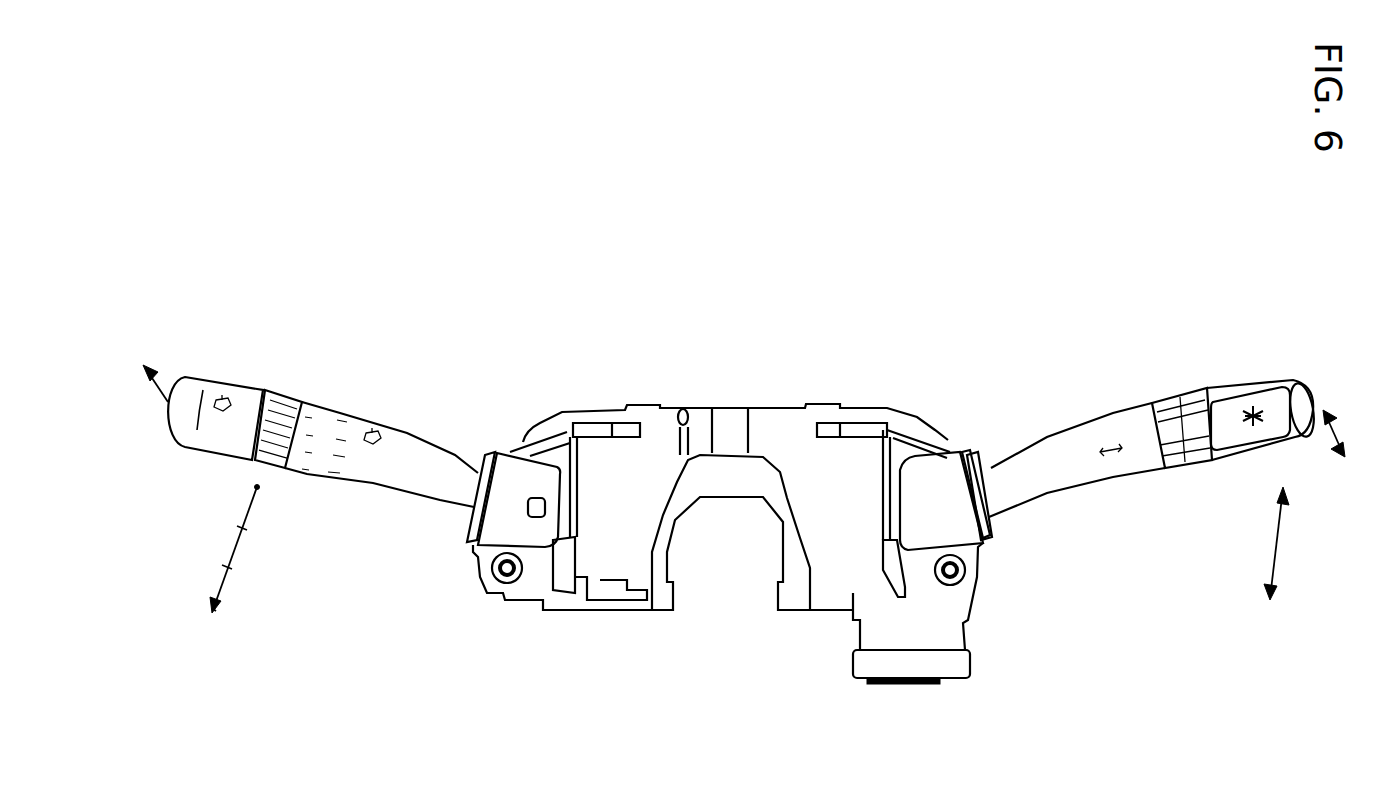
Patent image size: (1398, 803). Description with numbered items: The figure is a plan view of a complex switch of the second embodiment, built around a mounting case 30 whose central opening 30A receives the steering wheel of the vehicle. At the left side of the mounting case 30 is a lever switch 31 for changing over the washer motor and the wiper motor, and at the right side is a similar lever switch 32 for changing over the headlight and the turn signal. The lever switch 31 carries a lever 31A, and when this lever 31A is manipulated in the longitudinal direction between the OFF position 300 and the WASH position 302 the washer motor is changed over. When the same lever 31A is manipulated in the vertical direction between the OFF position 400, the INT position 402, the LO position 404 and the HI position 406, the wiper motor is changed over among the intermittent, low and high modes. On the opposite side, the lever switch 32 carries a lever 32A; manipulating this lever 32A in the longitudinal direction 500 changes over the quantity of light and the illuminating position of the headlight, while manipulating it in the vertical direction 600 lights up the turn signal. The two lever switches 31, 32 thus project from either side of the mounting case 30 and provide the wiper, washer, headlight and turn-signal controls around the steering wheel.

The mounting case 30 is at (780, 427).
The central opening 30A is at (727, 572).
The lever switch 31 is at (580, 293).
The lever 31A is at (210, 443).
The lever switch 32 is at (923, 295).
The lever 32A is at (1257, 460).
The OFF position 300 is at (168, 405).
The WASH position 302 is at (143, 364).
The OFF position 400 is at (260, 497).
The INT position 402 is at (242, 537).
The LO position 404 is at (230, 575).
The HI position 406 is at (215, 620).
The longitudinal direction 500 is at (1338, 432).
The vertical direction 600 is at (1290, 542).